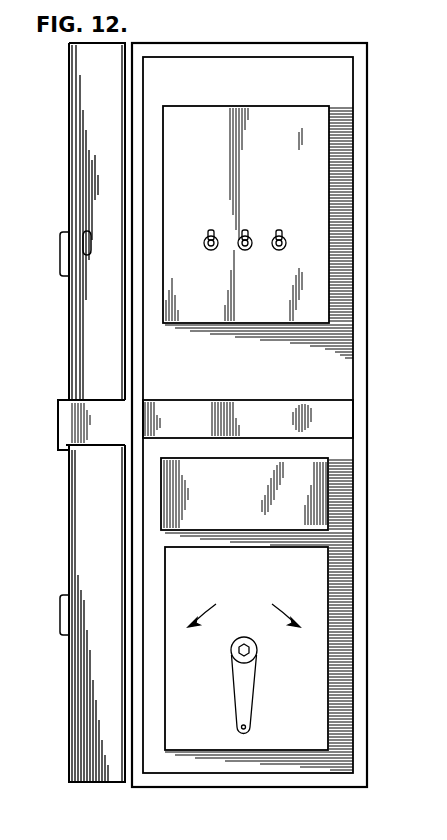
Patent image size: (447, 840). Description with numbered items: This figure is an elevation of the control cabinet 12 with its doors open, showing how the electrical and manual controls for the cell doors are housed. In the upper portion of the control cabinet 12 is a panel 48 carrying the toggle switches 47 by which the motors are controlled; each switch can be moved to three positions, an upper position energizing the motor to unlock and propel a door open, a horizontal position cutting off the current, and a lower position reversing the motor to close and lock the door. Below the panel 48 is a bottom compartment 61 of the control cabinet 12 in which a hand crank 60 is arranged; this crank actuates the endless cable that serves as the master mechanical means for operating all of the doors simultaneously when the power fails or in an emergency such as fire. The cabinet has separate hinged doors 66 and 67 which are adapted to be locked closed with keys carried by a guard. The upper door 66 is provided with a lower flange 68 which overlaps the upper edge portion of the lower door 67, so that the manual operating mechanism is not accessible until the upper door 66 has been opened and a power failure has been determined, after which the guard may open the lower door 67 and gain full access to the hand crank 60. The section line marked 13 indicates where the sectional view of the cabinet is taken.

The control cabinet 12 is at (367, 332).
The section line 13- 13 is at (236, 23).
The toggle switches 47 is at (214, 230).
The panel 48 is at (266, 379).
The hand crank 60 is at (245, 698).
The bottom compartment 61 is at (341, 677).
The upper hinged door 66 is at (80, 158).
The lower hinged door 67 is at (70, 553).
The lower flange 68 is at (62, 420).